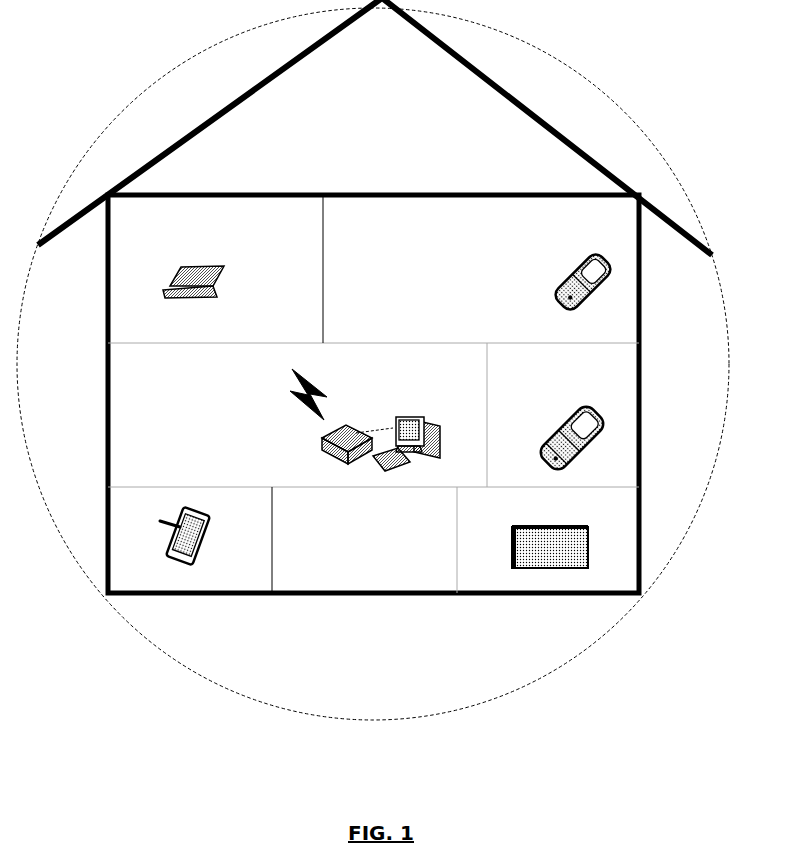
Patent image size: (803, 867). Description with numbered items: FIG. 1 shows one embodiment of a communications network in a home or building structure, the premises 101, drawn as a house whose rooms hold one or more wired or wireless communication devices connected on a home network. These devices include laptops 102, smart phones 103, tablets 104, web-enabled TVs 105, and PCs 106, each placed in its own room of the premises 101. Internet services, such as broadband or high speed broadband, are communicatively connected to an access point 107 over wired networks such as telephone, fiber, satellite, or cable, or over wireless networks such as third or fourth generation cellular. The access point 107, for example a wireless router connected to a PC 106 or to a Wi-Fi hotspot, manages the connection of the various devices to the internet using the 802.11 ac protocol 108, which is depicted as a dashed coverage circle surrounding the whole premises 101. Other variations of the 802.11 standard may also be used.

The home or building structure (premises) 101 is at (375, 296).
The laptops 102 is at (172, 282).
The smart phones 103 is at (601, 418).
The tablets 104 is at (206, 533).
The web-enabled TVs 105 is at (590, 557).
The PCs 106 is at (440, 440).
The access point 107 is at (352, 425).
The 802.11 ac protocol 108 is at (538, 680).